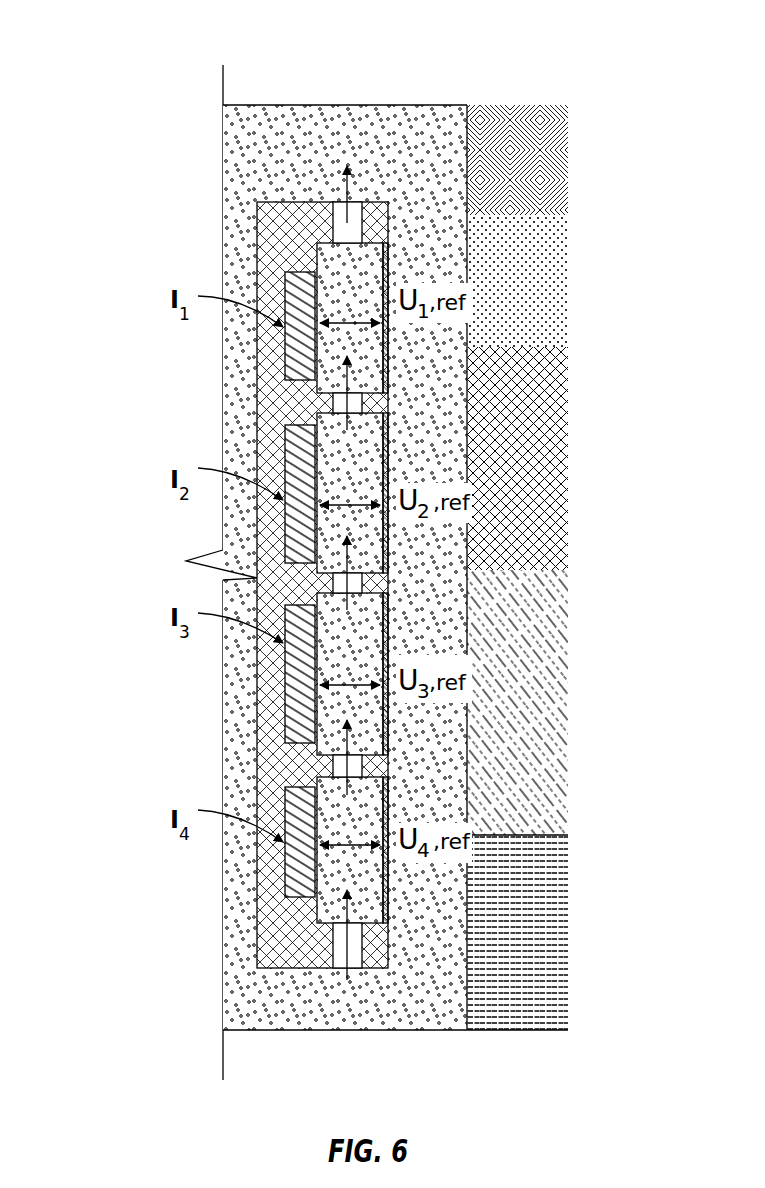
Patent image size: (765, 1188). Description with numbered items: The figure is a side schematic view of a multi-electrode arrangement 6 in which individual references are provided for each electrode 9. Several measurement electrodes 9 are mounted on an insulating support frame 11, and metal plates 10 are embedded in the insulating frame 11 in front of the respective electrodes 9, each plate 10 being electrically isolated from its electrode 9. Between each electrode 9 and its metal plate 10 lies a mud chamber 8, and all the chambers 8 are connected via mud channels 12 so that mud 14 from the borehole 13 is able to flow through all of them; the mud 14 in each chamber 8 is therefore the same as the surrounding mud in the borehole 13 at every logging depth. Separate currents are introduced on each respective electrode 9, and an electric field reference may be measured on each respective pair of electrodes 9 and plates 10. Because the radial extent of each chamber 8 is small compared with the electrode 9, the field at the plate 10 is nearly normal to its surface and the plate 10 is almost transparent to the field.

The subterranean formation 6 is at (522, 84).
The mud chamber 8 is at (359, 303).
The measurement electrode 9 is at (285, 357).
The metal plate 10 is at (390, 260).
The insulating support frame 11 is at (257, 251).
The mud channels 12 is at (350, 213).
The borehole 13 is at (272, 80).
The mud 14 is at (250, 1000).